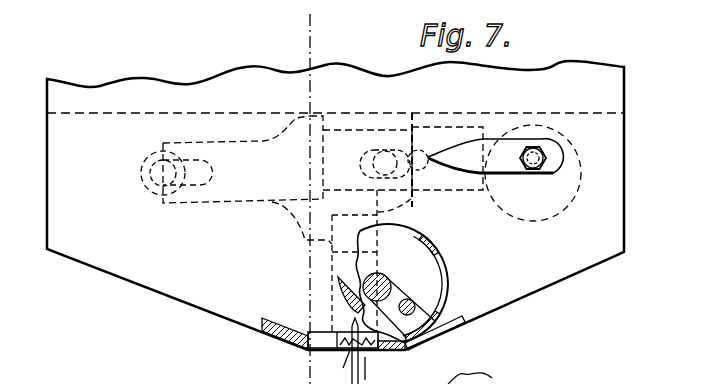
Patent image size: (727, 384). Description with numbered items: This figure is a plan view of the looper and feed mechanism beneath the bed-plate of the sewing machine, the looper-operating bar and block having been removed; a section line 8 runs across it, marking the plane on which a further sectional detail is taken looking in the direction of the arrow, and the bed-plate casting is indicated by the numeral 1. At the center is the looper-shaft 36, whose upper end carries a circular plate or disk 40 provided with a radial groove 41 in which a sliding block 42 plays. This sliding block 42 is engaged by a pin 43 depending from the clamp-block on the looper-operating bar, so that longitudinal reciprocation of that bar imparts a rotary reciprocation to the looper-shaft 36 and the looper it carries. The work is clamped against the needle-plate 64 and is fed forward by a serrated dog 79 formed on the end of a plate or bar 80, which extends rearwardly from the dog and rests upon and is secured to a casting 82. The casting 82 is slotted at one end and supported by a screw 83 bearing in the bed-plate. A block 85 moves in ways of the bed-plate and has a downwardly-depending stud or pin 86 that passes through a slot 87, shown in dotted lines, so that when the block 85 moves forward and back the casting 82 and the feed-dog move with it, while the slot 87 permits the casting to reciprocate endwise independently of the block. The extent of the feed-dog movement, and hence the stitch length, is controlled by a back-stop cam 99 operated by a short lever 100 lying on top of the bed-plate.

The body casing 1 is at (335, 205).
The section line 8 is at (338, 18).
The looper-shaft 36 is at (388, 274).
The circular plate or disk 40 is at (437, 260).
The radial groove 41 is at (409, 299).
The sliding block 42 is at (441, 298).
The pin 43 is at (428, 312).
The needle-plate 64 is at (408, 347).
The serrated dog 79 is at (376, 349).
The plate or bar 80 is at (469, 188).
The casting 82 is at (242, 201).
The screw 83 is at (150, 172).
The block 85 is at (369, 190).
The stud or pin 86 is at (379, 160).
The slot 87 is at (431, 147).
The back-stop cam 99 is at (544, 216).
The short lever 100 is at (495, 156).